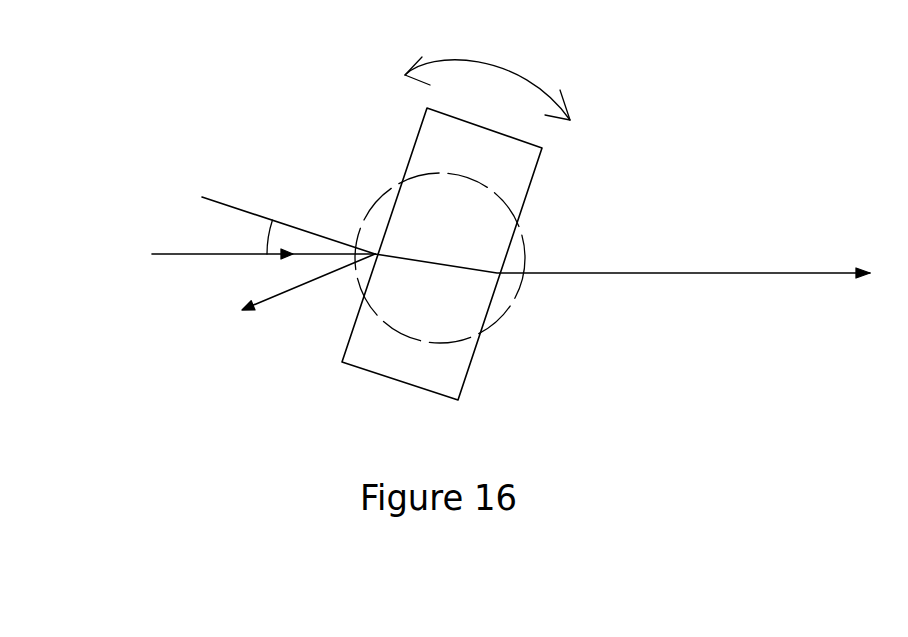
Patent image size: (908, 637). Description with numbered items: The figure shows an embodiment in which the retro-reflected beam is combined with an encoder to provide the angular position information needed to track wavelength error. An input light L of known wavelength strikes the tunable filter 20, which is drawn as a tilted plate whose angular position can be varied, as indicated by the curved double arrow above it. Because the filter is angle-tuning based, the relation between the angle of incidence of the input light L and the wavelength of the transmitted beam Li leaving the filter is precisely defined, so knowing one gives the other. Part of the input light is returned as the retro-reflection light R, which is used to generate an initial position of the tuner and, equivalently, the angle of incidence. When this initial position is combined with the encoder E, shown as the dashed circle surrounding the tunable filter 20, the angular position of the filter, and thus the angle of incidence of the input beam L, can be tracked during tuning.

The tunable filter 20 is at (473, 350).
The encoder E is at (532, 258).
The input light L is at (180, 255).
The retro-reflection light R is at (267, 298).
The transmitted beam Li is at (777, 273).